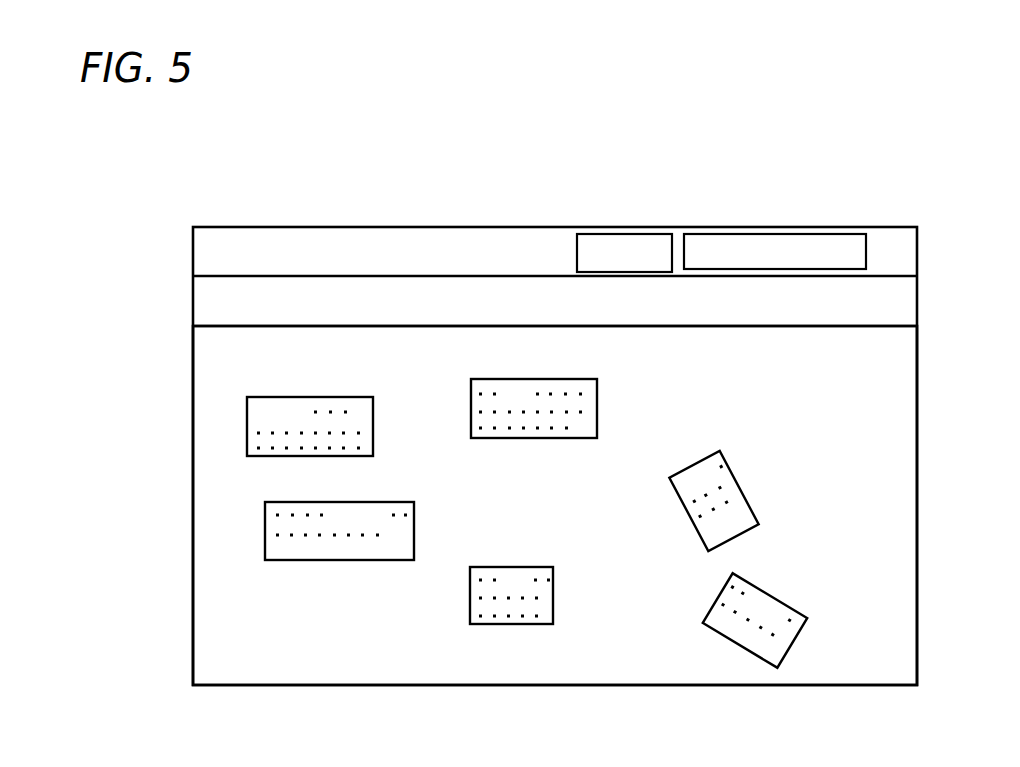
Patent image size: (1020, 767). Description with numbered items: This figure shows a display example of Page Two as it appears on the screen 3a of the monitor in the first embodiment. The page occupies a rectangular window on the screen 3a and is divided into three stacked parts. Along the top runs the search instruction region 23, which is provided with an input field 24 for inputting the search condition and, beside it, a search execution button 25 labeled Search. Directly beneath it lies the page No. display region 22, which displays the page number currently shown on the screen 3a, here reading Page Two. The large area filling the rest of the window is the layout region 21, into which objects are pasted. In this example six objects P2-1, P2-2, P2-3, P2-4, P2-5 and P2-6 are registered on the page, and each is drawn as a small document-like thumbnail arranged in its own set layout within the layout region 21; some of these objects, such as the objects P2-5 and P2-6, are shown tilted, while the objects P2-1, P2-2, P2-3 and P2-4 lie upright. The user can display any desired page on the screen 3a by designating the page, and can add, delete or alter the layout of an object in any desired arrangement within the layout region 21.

The screen 3a is at (398, 226).
The layout region 21 is at (193, 463).
The page No. display region 22 is at (193, 303).
The search instruction region 23 is at (193, 252).
The input field 24 is at (853, 233).
The search execution button 25 is at (628, 233).
The object P2-1 is at (373, 410).
The object P2-2 is at (414, 515).
The object P2-3 is at (597, 395).
The object P2-4 is at (553, 580).
The object P2-5 is at (727, 463).
The object P2-6 is at (755, 587).